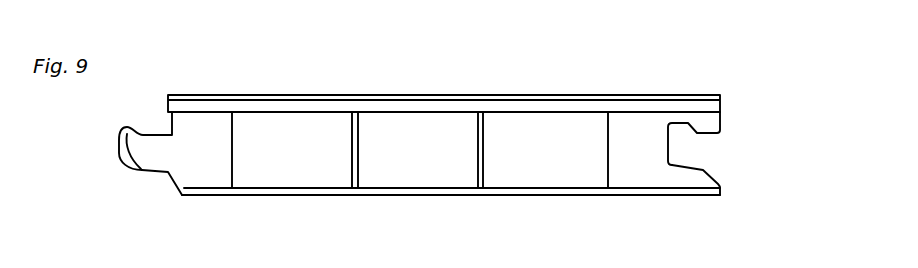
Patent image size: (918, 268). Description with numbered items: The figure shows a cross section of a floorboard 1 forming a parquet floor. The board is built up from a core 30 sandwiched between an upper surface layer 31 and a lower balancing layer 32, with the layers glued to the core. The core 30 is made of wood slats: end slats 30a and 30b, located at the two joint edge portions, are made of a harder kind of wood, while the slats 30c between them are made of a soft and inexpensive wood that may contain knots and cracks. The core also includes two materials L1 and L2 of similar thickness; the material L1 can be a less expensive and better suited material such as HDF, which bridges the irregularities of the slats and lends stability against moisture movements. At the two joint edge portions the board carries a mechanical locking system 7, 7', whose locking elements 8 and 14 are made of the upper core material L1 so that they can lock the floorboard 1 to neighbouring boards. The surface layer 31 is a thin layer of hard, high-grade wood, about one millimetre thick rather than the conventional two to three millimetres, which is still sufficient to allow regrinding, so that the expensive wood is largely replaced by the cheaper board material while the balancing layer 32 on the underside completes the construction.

The floorboard 1 is at (278, 62).
The material L1 is at (197, 112).
The material L2 is at (423, 135).
The surface layer 31 is at (572, 100).
The balancing layer 32 is at (413, 197).
The locking element 14 is at (682, 123).
The core 30 is at (752, 121).
The mechanical locking system 7 is at (98, 141).
The mechanical locking system 7' is at (749, 169).
The locking element 8 is at (143, 172).
The end slat 30a is at (202, 172).
The end slat 30b is at (648, 180).
The wood slats 30c is at (450, 172).